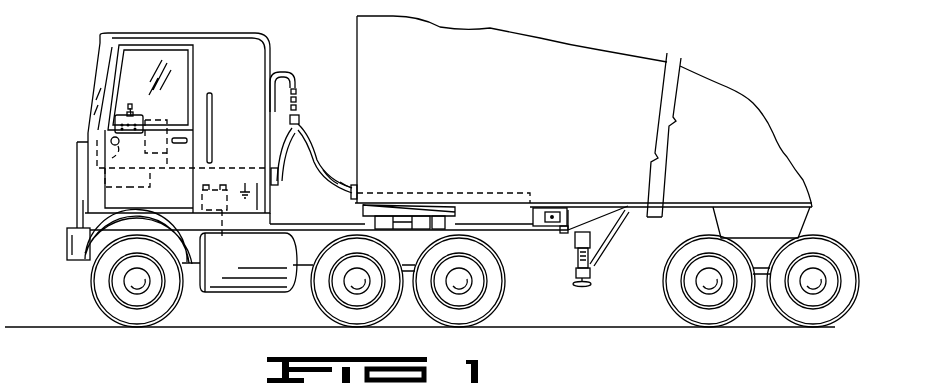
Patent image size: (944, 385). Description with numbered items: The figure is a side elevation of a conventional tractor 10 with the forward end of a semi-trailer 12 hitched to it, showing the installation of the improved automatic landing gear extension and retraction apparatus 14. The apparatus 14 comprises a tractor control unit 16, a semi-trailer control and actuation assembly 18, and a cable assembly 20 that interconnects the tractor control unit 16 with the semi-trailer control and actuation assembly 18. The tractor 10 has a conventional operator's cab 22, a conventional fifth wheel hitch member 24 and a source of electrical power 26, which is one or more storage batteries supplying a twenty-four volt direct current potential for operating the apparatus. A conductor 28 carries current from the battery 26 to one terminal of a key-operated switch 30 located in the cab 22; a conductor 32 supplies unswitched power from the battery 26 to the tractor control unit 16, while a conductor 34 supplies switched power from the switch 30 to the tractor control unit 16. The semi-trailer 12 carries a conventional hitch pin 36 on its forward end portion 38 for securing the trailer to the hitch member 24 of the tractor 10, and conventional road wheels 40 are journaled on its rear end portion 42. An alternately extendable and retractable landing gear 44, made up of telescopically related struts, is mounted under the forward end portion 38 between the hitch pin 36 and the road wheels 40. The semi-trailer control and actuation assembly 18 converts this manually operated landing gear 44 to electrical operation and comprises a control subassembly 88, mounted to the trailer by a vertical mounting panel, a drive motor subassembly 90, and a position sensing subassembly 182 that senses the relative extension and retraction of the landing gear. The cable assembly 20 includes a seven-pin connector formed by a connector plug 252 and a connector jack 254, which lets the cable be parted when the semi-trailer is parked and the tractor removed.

The tractor 10 is at (222, 50).
The semi-trailer 12 is at (590, 53).
The landing gear extension and retraction apparatus 14 is at (309, 100).
The tractor control unit 16 is at (131, 96).
The semi-trailer control and actuation assembly 18 is at (538, 233).
The cable assembly 20 is at (327, 188).
The operator's cab 22 is at (245, 47).
The fifth wheel hitch member 24 is at (376, 211).
The source of electrical power 26 is at (223, 238).
The conductor 28 is at (97, 168).
The key-operated switch 30 is at (110, 140).
The conductor 32 is at (113, 180).
The conductor 34 is at (142, 174).
The hitch pin 36 is at (412, 210).
The forward end portion 38 is at (378, 109).
The road wheels 40 is at (676, 284).
The rear end portion 42 is at (790, 182).
The landing gear 44 is at (576, 258).
The control subassembly 88 is at (521, 219).
The drive motor subassembly 90 is at (556, 244).
The position sensing subassembly 182 is at (606, 248).
The connector plug 252 is at (358, 178).
The connector jack 254 is at (346, 175).